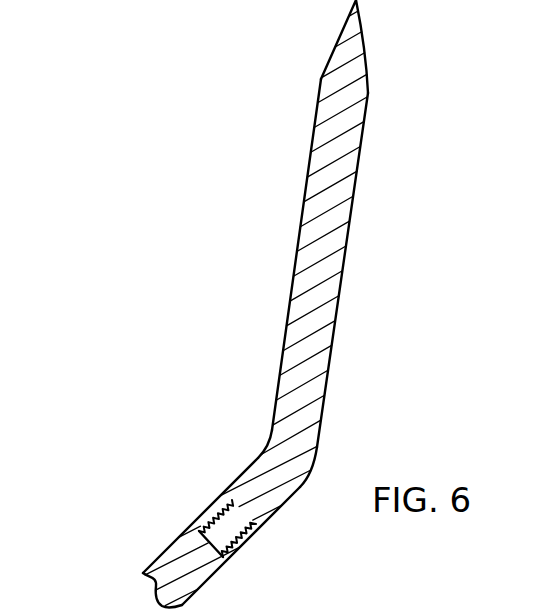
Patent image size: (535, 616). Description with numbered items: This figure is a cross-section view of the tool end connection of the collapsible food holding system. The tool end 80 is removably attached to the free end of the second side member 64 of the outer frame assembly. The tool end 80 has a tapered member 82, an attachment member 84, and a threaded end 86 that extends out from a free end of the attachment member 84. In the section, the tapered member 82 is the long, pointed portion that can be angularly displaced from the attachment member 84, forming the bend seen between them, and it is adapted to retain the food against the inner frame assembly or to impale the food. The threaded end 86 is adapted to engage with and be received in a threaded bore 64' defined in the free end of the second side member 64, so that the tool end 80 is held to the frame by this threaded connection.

The tapered member 82 is at (352, 8).
The tool end 80 is at (299, 239).
The attachment member 84 is at (248, 469).
The second side member 64 is at (179, 533).
The threaded bore 64' is at (180, 515).
The threaded end 86 is at (229, 529).